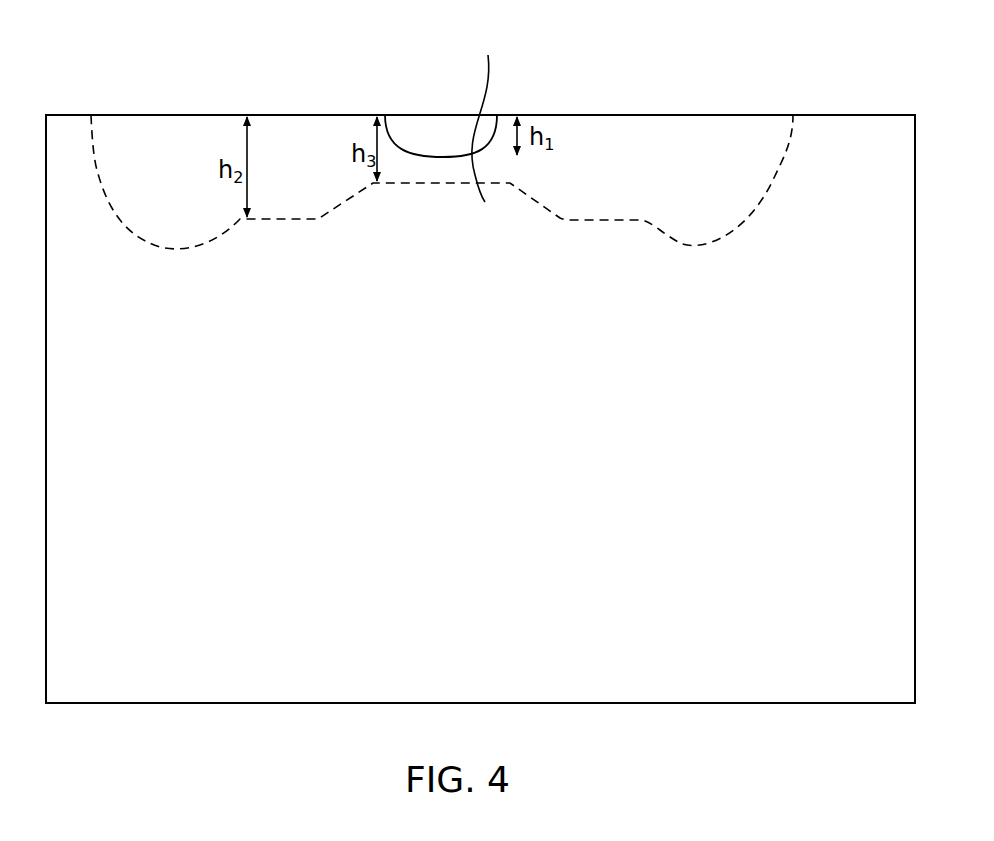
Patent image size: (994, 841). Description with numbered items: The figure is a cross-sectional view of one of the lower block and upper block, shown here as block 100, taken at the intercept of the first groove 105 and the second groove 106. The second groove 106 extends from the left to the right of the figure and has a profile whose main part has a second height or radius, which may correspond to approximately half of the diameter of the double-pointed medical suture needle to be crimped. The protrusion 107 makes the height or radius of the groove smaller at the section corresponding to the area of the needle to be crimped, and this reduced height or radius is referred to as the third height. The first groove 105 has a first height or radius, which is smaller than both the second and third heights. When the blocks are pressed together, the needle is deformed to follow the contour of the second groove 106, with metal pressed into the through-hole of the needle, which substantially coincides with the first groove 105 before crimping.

The workpiece / glass article 100 is at (141, 68).
The first groove 105 is at (438, 137).
The second groove 106 is at (603, 137).
The protrusion 107 is at (488, 116).